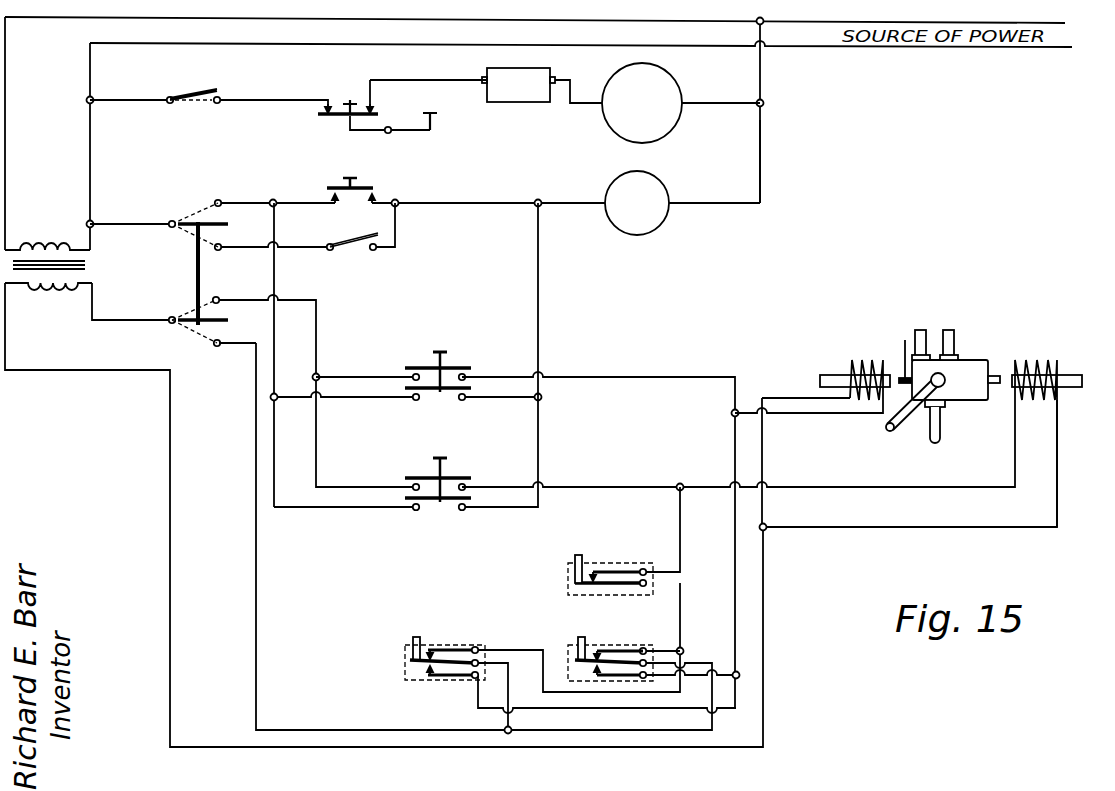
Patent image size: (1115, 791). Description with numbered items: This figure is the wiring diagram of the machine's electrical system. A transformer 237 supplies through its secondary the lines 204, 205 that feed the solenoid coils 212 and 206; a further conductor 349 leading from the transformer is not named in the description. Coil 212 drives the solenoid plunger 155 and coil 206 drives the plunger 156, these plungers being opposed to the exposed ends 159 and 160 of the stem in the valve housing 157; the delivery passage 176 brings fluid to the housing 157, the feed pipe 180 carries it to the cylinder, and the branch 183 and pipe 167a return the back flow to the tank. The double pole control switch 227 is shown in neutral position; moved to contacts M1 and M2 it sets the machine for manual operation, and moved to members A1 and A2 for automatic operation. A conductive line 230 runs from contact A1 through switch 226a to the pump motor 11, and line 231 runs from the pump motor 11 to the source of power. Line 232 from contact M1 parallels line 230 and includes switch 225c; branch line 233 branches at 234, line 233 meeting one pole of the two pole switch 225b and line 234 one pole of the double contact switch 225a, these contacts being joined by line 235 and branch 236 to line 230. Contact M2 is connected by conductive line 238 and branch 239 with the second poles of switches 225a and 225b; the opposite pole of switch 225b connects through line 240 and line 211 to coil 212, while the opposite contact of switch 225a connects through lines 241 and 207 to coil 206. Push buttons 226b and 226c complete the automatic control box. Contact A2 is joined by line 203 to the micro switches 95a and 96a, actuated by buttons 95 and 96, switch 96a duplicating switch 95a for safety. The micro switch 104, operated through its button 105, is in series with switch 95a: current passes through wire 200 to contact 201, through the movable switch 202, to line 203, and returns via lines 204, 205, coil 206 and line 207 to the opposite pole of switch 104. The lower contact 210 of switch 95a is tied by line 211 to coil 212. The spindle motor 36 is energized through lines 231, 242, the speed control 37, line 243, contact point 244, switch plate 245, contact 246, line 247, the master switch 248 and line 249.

The pump motor 11 is at (667, 190).
The spindle motor 36 is at (673, 80).
The speed control 37 is at (503, 68).
The spring button 95 is at (414, 638).
The micro-switch 95a is at (402, 649).
The switch button 96 is at (581, 640).
The second micro-switch 96a is at (645, 647).
The micro-switch 104 is at (564, 578).
The projecting button 105 is at (578, 556).
The solenoid plunger 155 is at (830, 375).
The solenoid plunger 156 is at (1085, 372).
The valve housing 157 is at (962, 362).
The exposed end 159 is at (905, 345).
The opposite exposed end 160 is at (995, 375).
The pipe 167a is at (899, 429).
The unitary delivery passage 176 is at (941, 430).
The feed pipe 180 is at (921, 330).
The branch 183 is at (951, 330).
The wire 200 is at (682, 606).
The contact 201 is at (450, 648).
The movable switch 202 is at (415, 662).
The line 203 is at (258, 604).
The line 204 is at (766, 616).
The line 205 is at (1058, 490).
The solenoid coil 206 is at (1043, 365).
The line 207 is at (680, 527).
The lower contact 210 is at (446, 678).
The line 211 is at (735, 616).
The coil 212 is at (858, 365).
The push button switch 225a is at (448, 478).
The push button switch 225b is at (442, 353).
The push button switch 225c is at (360, 178).
The push button switch 226a is at (354, 243).
The push button switch 226b is at (440, 128).
The push button switch 226c is at (352, 98).
The control switch 227 is at (195, 274).
The conductive line 230 is at (476, 205).
The line 231 is at (762, 171).
The line 232 is at (274, 200).
The branch line 233 is at (277, 362).
The branch 234 is at (365, 508).
The line 235 is at (540, 302).
The branch 236 is at (507, 398).
The transformer 237 is at (42, 243).
The conductive line 238 is at (318, 303).
The branch 239 is at (354, 377).
The line 240 is at (631, 377).
The conductive line 241 is at (614, 487).
The line 242 is at (713, 103).
The line 243 is at (437, 80).
The contact point 244 is at (372, 108).
The switch plate 245 is at (344, 119).
The contact 246 is at (318, 114).
The line 247 is at (262, 100).
The master switch 248 is at (191, 104).
The line 249 is at (310, 40).
The conductor 349 is at (90, 166).
The manual contact M1 is at (203, 201).
The automatic contact A1 is at (203, 247).
The manual contact M2 is at (205, 296).
The automatic contact A2 is at (201, 345).